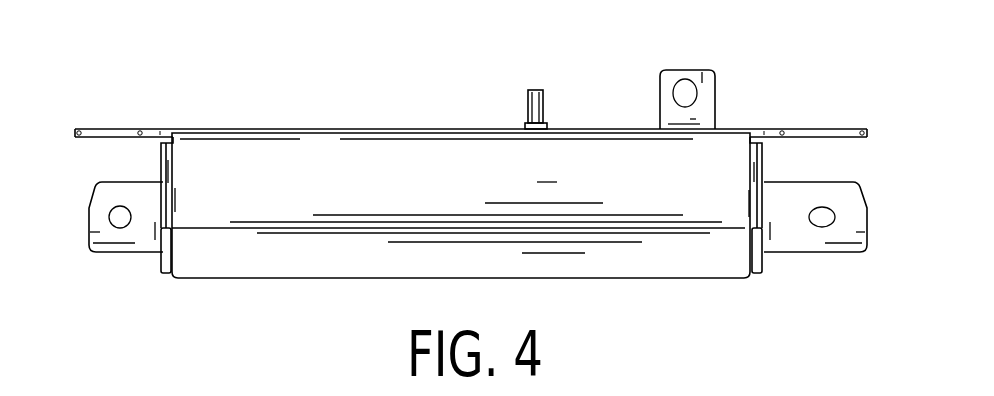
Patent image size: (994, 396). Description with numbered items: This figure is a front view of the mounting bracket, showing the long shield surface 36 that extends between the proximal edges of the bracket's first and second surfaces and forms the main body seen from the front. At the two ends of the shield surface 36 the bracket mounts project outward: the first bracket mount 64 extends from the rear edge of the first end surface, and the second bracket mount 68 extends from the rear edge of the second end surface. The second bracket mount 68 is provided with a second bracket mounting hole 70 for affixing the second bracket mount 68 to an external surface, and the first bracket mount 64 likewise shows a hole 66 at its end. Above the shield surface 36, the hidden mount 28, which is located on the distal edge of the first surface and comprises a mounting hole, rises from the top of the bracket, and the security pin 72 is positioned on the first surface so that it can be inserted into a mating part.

The hidden mount 28 is at (714, 95).
The shield surface 36 is at (415, 190).
The first bracket mount 64 is at (95, 200).
The first mounting hole 66 is at (123, 220).
The second bracket mount 68 is at (861, 205).
The second bracket mounting hole 70 is at (818, 217).
The security pin 72 is at (540, 88).